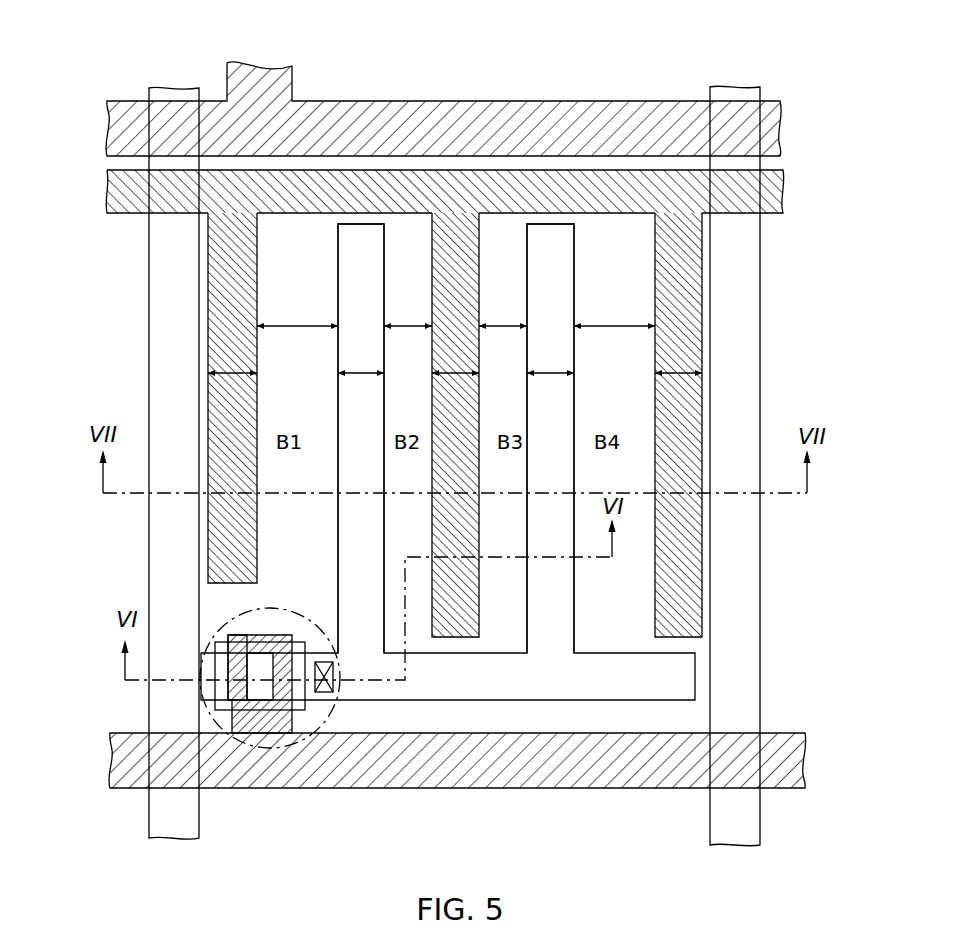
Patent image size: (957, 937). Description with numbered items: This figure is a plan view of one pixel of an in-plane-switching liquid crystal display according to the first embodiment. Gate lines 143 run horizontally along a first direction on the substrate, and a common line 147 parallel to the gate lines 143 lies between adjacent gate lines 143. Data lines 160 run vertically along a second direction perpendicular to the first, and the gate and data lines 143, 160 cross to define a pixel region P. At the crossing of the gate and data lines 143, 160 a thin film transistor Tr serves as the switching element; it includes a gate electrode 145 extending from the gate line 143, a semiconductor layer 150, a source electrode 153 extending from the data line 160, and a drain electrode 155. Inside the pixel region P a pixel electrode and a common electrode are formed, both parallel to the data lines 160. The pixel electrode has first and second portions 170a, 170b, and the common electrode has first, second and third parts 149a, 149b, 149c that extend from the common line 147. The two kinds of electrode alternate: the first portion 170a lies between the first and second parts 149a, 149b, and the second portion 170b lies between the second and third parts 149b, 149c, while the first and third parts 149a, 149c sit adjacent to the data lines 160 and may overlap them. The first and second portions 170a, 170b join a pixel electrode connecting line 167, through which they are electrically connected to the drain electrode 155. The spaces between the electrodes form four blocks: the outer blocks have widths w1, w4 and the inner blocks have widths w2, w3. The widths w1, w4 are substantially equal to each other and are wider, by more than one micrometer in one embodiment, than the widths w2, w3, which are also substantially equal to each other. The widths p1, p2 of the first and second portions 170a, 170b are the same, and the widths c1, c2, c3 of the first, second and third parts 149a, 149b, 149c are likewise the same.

The gate line 143 is at (613, 788).
The gate electrode 145 is at (232, 707).
The common line 147 is at (782, 193).
The first part of the common electrode 149a is at (223, 275).
The second part of the common electrode 149b is at (460, 632).
The third part of the common electrode 149c is at (693, 580).
The semiconductor layer 150 is at (300, 707).
The source electrode 153 is at (213, 678).
The drain electrode 155 is at (318, 635).
The data line 160 is at (162, 338).
The pixel electrode connecting line 167 is at (683, 678).
The first portion of the pixel electrode 170a is at (363, 233).
The second portion of the pixel electrode 170b is at (547, 237).
The pixel region P is at (614, 230).
The thin film transistor Tr is at (274, 748).
The width of the first block w1 is at (297, 315).
The width of the second block w2 is at (408, 315).
The width of the third block w3 is at (503, 315).
The width of the fourth block w4 is at (614, 315).
The width of the first part of the common electrode c1 is at (232, 361).
The width of the second part of the common electrode c2 is at (455, 361).
The width of the third part of the common electrode c3 is at (678, 361).
The width of the first portion of the pixel electrode p1 is at (361, 361).
The width of the second portion of the pixel electrode p2 is at (550, 361).